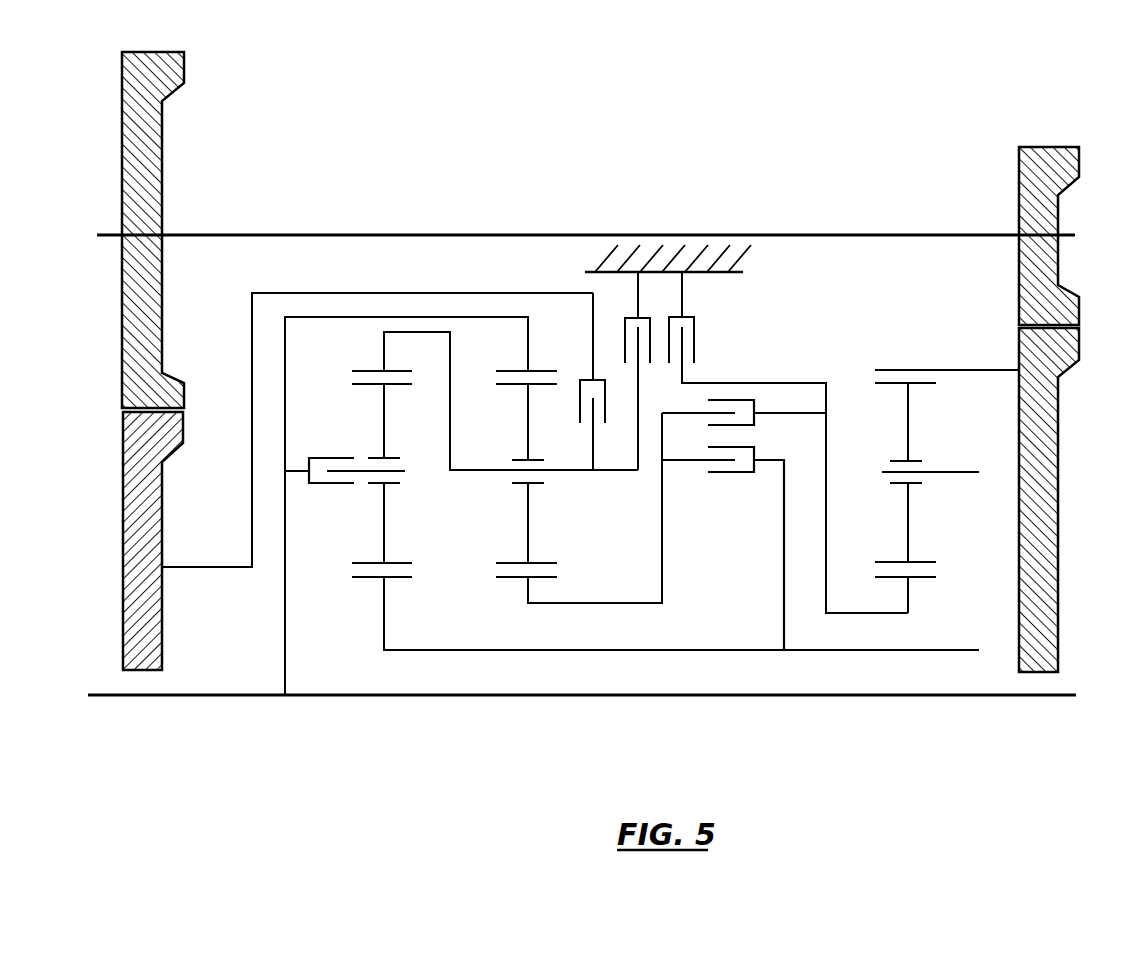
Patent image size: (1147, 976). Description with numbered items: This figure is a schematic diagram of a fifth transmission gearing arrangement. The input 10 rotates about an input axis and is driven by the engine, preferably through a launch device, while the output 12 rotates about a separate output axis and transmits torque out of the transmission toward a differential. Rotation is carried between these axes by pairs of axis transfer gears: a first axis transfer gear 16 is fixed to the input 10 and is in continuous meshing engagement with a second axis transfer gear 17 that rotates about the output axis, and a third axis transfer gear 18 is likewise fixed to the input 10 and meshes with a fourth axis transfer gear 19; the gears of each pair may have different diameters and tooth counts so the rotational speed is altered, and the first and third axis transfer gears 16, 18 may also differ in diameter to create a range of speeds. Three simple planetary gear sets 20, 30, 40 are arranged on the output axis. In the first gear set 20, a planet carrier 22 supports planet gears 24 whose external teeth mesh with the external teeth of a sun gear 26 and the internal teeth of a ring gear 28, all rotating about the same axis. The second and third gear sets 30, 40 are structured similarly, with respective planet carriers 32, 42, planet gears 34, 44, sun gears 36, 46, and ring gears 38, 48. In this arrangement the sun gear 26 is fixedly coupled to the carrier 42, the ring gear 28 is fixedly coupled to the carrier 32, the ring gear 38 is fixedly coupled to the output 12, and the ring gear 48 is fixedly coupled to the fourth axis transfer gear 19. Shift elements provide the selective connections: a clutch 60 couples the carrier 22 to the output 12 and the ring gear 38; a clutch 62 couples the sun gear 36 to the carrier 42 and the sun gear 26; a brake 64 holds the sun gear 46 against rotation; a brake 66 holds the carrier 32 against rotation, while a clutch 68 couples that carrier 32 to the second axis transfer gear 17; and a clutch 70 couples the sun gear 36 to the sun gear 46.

The input 10 is at (401, 233).
The output 12 is at (681, 698).
The first axis transfer gear 16 is at (158, 158).
The second axis transfer gear 17 is at (155, 652).
The third axis transfer gear 18 is at (1049, 265).
The fourth axis transfer gear 19 is at (1050, 480).
The first planetary gear set 20 is at (371, 549).
The planet carrier 22 is at (405, 471).
The planet gears 24 is at (384, 426).
The sun gear 26 is at (385, 600).
The ring gear 28 is at (385, 340).
The second planetary gear set 30 is at (535, 530).
The planet carrier 32 is at (553, 474).
The planet gears 34 is at (528, 431).
The sun gear 36 is at (536, 604).
The ring gear 38 is at (528, 345).
The third planetary gear set 40 is at (933, 542).
The planet carrier 42 is at (952, 471).
The planet gears 44 is at (908, 420).
The sun gear 46 is at (908, 613).
The ring gear 48 is at (945, 370).
The clutch 60 is at (319, 456).
The clutch 62 is at (723, 548).
The brake 64 is at (746, 429).
The brake 66 is at (628, 371).
The clutch 68 is at (602, 381).
The clutch 70 is at (744, 421).